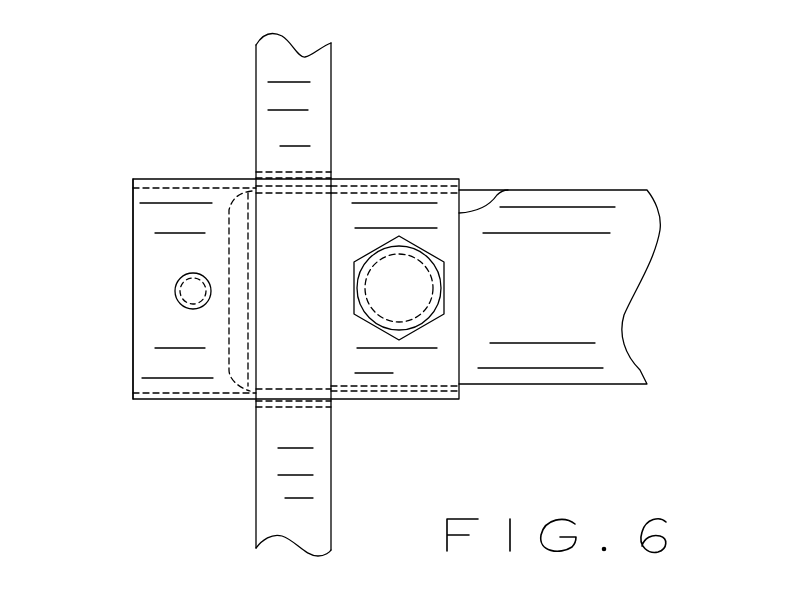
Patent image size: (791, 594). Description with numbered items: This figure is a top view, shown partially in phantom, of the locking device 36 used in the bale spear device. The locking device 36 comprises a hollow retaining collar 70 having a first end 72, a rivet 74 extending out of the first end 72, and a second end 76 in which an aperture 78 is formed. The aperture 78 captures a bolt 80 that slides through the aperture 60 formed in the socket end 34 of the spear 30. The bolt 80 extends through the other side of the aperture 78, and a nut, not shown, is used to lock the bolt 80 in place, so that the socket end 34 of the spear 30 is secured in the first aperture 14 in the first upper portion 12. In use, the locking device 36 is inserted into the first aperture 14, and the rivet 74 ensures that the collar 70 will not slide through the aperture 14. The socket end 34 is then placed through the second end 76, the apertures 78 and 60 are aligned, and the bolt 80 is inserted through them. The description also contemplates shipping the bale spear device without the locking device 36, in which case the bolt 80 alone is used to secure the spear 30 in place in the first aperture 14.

The first upper portion 12 is at (331, 95).
The first aperture 14 is at (331, 176).
The spear 30 is at (565, 188).
The socket end 34 is at (240, 368).
The locking device 36 is at (193, 423).
The aperture 60 is at (443, 262).
The hollow retaining collar 70 is at (202, 179).
The first end 72 is at (133, 255).
The rivet 74 is at (185, 307).
The second end 76 is at (512, 190).
The aperture 78 is at (430, 315).
The bolt 80 is at (415, 342).